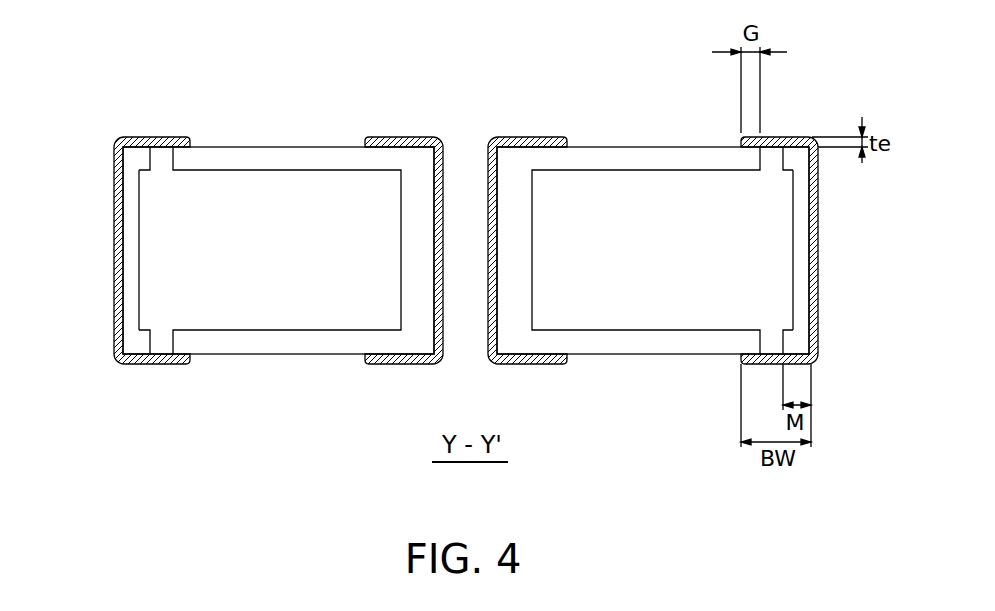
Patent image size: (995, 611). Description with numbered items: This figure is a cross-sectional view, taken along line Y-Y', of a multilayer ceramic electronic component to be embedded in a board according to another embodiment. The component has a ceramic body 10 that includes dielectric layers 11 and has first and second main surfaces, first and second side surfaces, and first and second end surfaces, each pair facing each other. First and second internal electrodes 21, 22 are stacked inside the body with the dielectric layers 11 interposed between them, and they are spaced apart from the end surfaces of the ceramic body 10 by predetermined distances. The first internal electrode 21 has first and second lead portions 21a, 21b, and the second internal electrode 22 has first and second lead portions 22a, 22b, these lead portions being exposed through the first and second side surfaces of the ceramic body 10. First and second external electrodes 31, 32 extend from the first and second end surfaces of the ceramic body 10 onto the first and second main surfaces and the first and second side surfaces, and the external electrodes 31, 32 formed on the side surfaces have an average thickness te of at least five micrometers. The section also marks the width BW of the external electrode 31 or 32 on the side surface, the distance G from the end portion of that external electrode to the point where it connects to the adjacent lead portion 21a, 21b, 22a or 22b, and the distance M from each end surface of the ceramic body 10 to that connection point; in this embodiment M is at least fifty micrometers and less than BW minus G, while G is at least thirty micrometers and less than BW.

The ceramic body 10 is at (284, 354).
The dielectric layers 11 is at (283, 156).
The first internal electrode 21 is at (231, 330).
The first lead portion of first internal electrode 21a is at (163, 340).
The second lead portion of first internal electrode 21b is at (163, 156).
The second internal electrode 22 is at (607, 330).
The first lead portion of second internal electrode 22a is at (767, 340).
The second lead portion of second internal electrode 22b is at (767, 155).
The first external electrode 31 is at (158, 142).
The second external electrode 32 is at (398, 142).